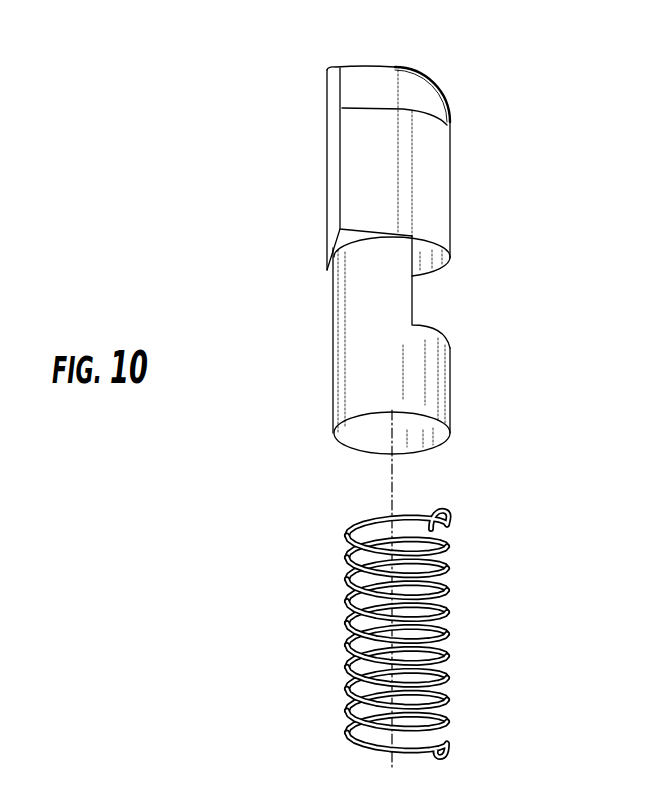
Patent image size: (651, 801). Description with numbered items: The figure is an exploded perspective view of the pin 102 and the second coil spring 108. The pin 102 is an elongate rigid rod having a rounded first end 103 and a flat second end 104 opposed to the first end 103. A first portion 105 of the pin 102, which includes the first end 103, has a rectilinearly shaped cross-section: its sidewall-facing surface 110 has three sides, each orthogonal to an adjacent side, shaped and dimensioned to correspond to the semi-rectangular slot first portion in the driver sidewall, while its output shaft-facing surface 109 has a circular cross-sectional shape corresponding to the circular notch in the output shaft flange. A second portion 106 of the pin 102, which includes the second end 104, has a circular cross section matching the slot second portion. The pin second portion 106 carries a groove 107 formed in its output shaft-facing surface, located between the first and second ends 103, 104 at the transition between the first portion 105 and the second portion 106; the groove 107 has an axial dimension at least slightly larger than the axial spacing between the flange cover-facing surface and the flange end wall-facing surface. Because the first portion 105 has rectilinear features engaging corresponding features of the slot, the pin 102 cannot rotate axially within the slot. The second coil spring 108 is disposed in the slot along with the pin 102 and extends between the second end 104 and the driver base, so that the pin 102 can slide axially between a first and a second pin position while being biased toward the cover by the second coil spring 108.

The pin 102 is at (334, 294).
The first end 103 is at (374, 67).
The second end 104 is at (418, 436).
The first portion 105 is at (428, 151).
The second portion 106 is at (432, 373).
The groove 107 is at (423, 285).
The second coil spring 108 is at (347, 600).
The output shaft-facing surface 109 is at (450, 177).
The sidewall-facing surface 110 is at (334, 181).